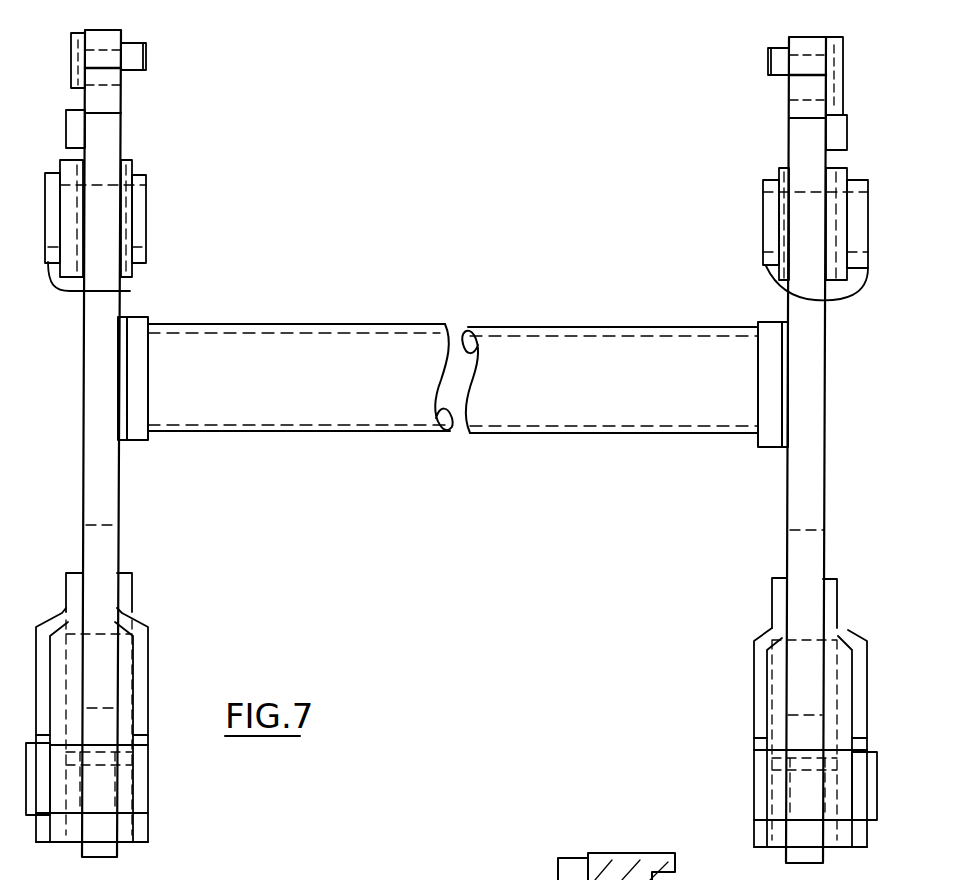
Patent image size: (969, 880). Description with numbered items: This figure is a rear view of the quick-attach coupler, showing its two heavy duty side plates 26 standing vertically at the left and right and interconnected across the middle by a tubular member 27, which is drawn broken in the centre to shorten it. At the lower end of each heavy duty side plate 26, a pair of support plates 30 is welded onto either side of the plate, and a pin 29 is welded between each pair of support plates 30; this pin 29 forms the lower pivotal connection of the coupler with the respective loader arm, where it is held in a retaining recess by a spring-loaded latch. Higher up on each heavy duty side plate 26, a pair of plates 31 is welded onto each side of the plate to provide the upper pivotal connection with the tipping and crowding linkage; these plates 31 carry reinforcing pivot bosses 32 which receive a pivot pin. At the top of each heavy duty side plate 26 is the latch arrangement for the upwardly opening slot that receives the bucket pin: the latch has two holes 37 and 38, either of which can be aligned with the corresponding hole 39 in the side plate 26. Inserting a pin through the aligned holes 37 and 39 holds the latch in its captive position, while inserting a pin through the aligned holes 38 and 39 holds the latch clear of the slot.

The heavy duty side plate 26 is at (98, 412).
The tubular member 27 is at (300, 338).
The pin 29 is at (95, 786).
The support plate 30 is at (145, 657).
The plate 31 is at (92, 172).
The reinforcing pivot boss 32 is at (146, 180).
The hole 37 is at (78, 80).
The hole 38 is at (108, 110).
The hole 39 is at (105, 24).